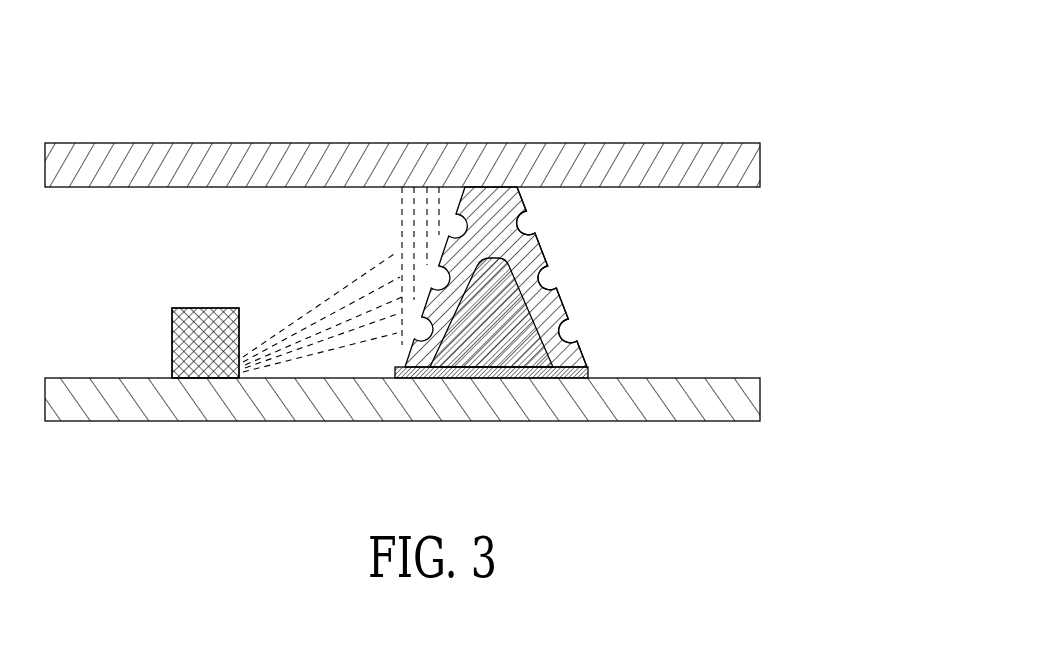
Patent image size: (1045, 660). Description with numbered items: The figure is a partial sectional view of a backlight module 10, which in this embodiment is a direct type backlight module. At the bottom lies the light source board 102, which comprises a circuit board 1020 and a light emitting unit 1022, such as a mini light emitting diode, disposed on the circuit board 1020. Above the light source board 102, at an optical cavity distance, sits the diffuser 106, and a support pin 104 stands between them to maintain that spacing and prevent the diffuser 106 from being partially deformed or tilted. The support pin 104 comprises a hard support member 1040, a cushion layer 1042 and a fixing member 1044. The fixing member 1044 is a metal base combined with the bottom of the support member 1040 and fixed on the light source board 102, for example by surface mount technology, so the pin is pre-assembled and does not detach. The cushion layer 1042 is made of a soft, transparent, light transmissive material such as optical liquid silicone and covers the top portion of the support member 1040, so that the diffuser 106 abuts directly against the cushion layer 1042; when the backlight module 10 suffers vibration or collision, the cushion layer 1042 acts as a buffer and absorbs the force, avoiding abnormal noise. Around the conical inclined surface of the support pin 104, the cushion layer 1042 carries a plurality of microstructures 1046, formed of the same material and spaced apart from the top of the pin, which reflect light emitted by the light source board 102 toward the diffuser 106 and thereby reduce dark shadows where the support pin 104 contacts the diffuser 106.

The backlight module 10 is at (597, 88).
The light source board 102 is at (143, 342).
The circuit board 1020 is at (103, 421).
The light emitting unit 1022 is at (193, 308).
The support pin 104 is at (562, 252).
The support member 1040 is at (530, 306).
The cushion layer 1042 is at (523, 200).
The fixing member 1044 is at (588, 368).
The microstructures 1046 is at (580, 327).
The diffuser 106 is at (760, 160).